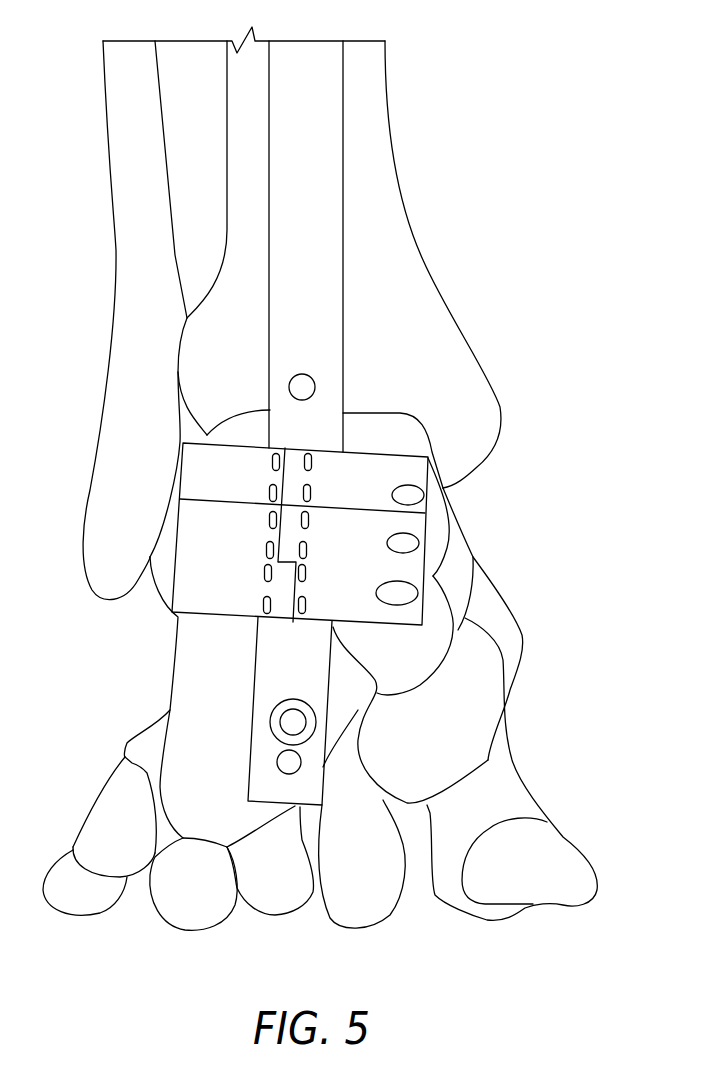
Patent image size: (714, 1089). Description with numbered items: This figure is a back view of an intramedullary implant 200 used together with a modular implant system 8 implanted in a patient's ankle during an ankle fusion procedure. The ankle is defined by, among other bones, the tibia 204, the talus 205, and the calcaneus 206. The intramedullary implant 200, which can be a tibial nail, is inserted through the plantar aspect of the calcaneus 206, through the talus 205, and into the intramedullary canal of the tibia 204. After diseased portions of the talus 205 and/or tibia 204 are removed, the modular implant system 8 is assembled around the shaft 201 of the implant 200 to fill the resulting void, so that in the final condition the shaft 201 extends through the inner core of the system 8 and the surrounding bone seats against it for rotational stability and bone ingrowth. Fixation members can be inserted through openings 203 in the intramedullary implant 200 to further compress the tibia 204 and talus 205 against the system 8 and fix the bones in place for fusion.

The modular implant system 8 is at (400, 470).
The intramedullary implant 200 is at (293, 300).
The shaft 201 is at (323, 98).
The openings 203 is at (302, 387).
The tibia 204 is at (385, 252).
The talus 205 is at (437, 525).
The calcaneus 206 is at (195, 652).